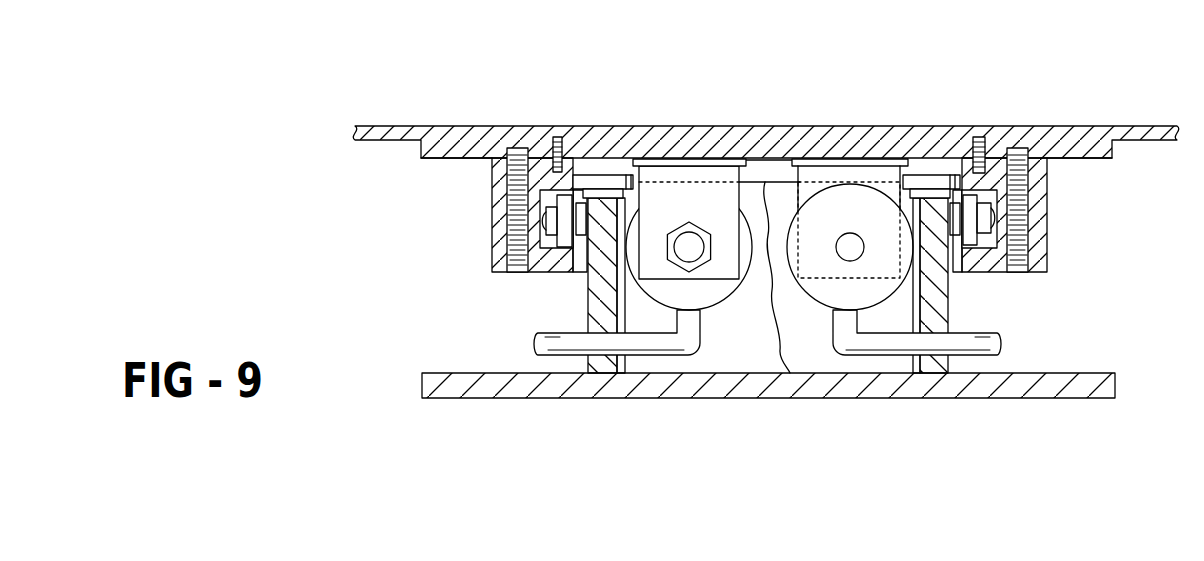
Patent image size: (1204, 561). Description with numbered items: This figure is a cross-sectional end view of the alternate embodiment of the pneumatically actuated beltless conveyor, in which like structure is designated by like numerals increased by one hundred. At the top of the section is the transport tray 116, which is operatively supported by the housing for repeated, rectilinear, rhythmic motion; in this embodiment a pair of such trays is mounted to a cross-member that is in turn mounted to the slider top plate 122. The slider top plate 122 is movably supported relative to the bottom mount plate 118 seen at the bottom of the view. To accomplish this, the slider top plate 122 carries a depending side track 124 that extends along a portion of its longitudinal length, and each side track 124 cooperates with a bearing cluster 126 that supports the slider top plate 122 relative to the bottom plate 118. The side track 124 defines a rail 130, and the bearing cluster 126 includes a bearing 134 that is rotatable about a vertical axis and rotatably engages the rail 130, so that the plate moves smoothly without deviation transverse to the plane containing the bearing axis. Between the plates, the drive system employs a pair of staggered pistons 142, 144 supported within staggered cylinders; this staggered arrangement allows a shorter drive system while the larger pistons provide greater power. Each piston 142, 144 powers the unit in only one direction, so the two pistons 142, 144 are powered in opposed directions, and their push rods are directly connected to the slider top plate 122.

The transport tray 116 is at (1077, 132).
The bottom mount plate 118 is at (450, 387).
The slider top plate 122 is at (420, 148).
The side track 124 is at (448, 217).
The bearing cluster 126 is at (555, 213).
The rail 130 is at (962, 165).
The bearing 134 is at (602, 180).
The first staggered piston 142 is at (657, 288).
The second staggered piston 144 is at (877, 288).